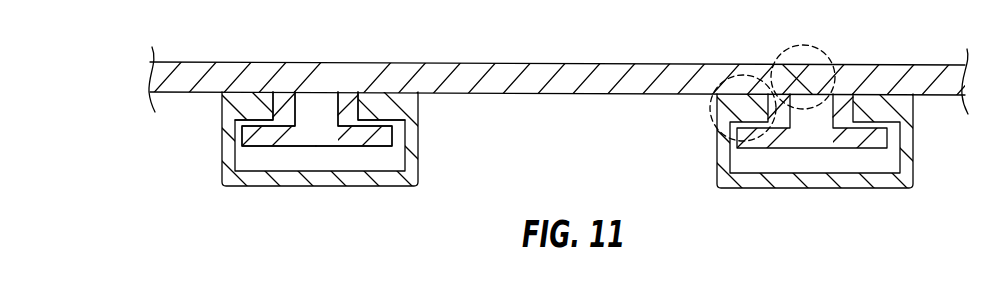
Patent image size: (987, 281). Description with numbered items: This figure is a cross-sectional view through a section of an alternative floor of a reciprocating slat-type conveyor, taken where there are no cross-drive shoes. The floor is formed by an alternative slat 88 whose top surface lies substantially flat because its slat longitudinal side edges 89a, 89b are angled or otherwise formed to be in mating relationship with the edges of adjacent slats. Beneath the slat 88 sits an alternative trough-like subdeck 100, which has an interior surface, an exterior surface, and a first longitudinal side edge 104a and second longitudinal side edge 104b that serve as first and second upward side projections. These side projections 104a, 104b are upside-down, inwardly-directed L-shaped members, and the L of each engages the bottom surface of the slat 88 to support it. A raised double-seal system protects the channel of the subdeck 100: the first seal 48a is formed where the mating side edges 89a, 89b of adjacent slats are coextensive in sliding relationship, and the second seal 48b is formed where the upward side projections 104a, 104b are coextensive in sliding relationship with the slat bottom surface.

The slat 88 is at (393, 67).
The slat longitudinal side edge 89a is at (320, 92).
The slat longitudinal side edge 89b is at (320, 92).
The subdeck 100 is at (415, 148).
The first longitudinal side edge 104a is at (415, 100).
The second longitudinal side edge 104b is at (232, 110).
The first seal 48a is at (805, 44).
The second seal 48b is at (711, 107).